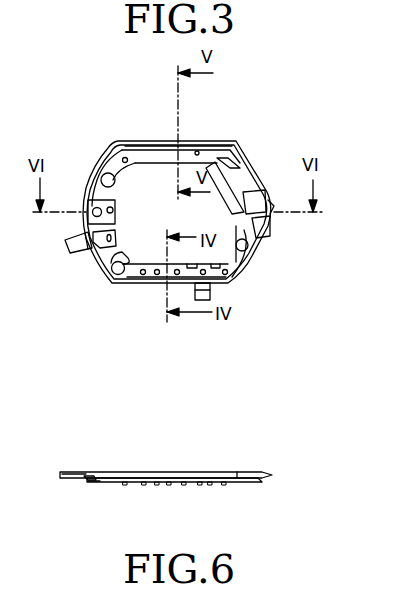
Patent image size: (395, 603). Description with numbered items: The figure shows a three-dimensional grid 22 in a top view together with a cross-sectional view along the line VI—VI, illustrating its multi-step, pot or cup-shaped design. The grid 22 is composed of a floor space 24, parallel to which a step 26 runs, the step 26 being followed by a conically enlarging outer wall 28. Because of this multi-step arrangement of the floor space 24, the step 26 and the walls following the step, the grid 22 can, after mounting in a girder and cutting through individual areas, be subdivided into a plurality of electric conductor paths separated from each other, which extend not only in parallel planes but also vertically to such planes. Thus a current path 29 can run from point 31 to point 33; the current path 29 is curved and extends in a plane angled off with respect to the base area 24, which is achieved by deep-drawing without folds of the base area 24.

In FIG. 3, the grid 22 is at (256, 152).
In FIG. 6, the grid 22 is at (237, 494).
In FIG. 3, the floor space 24 is at (115, 160).
In FIG. 6, the floor space 24 is at (96, 484).
In FIG. 3, the step 26 is at (257, 198).
In FIG. 6, the step 26 is at (95, 475).
In FIG. 3, the outer wall 28 is at (207, 141).
In FIG. 6, the outer wall 28 is at (84, 478).
In FIG. 3, the current path 29 is at (142, 147).
In FIG. 3, the point 31 is at (80, 218).
In FIG. 3, the point 33 is at (272, 205).